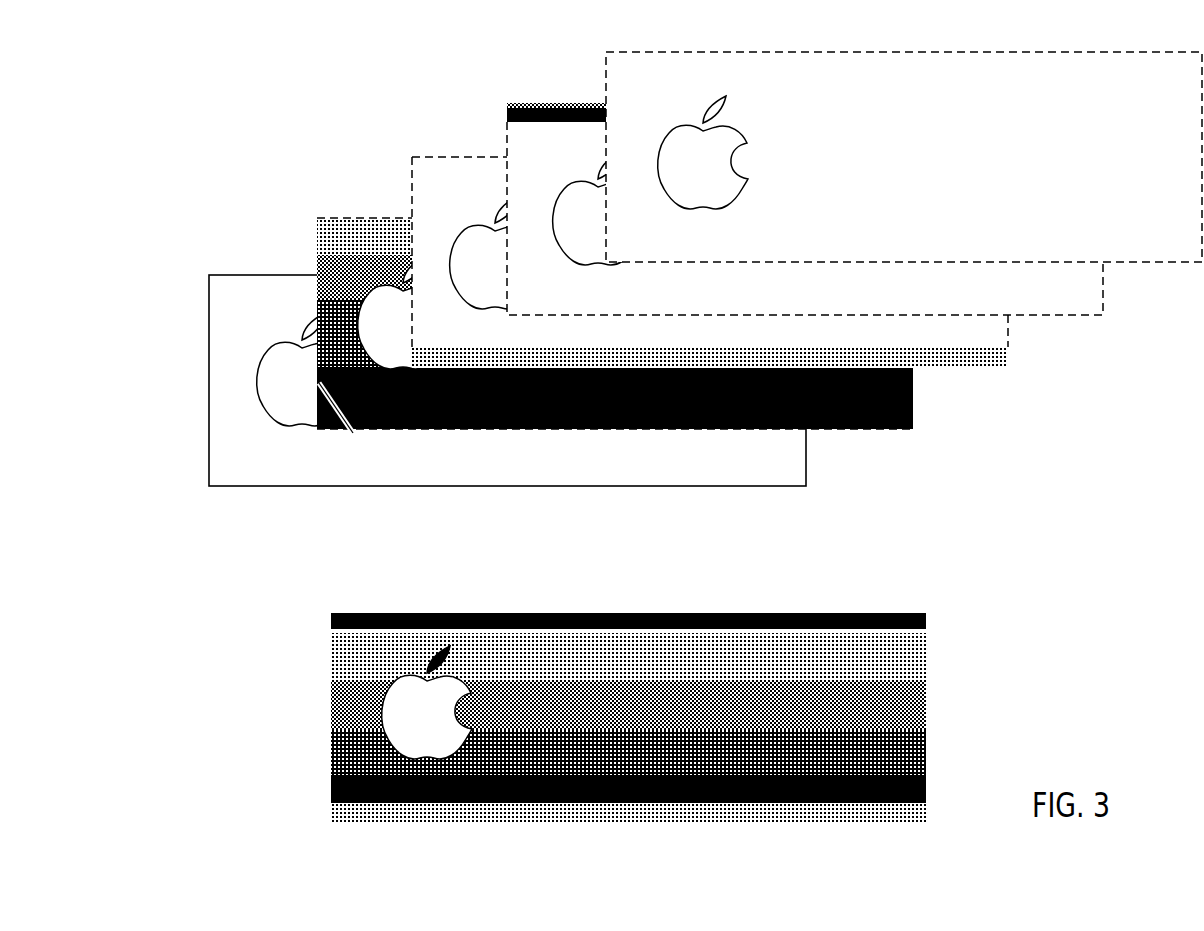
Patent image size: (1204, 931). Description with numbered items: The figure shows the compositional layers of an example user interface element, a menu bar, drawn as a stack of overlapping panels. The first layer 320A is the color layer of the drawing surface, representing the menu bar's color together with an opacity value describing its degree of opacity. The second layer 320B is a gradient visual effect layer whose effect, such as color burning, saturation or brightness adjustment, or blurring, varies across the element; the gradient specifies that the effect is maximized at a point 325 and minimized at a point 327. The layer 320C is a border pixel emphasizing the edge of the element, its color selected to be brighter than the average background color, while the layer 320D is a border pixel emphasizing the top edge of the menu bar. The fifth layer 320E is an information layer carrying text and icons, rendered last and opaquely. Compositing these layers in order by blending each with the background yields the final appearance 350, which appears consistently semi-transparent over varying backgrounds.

The first layer 320A is at (209, 292).
The second layer 320B is at (318, 225).
The layer 320C is at (412, 165).
The layer 320D is at (507, 112).
The fifth layer 320E is at (605, 62).
The point 325 is at (353, 433).
The point 327 is at (318, 268).
The final appearance 350 is at (370, 613).